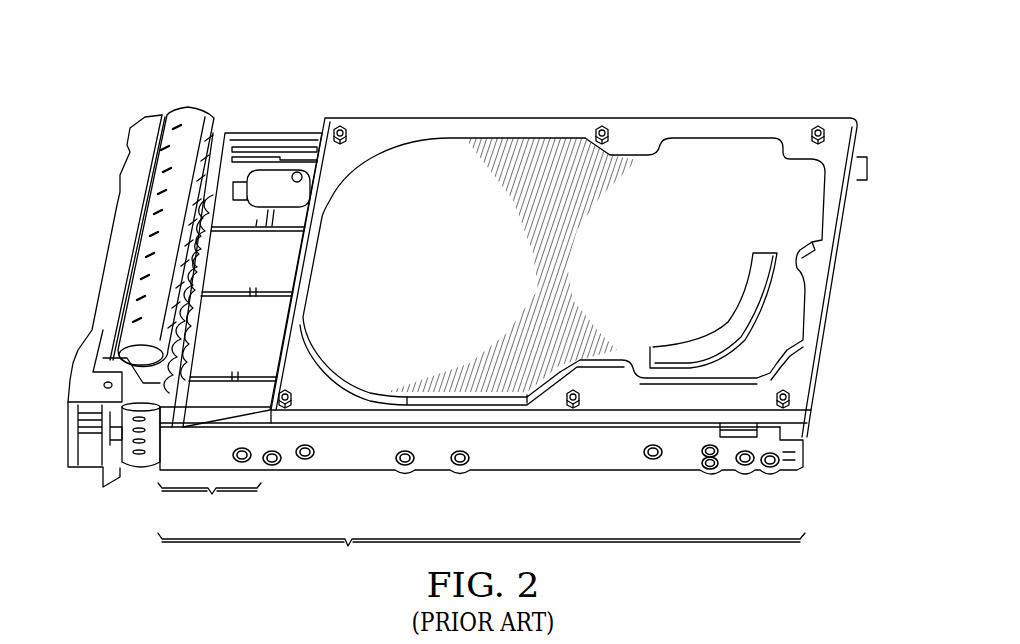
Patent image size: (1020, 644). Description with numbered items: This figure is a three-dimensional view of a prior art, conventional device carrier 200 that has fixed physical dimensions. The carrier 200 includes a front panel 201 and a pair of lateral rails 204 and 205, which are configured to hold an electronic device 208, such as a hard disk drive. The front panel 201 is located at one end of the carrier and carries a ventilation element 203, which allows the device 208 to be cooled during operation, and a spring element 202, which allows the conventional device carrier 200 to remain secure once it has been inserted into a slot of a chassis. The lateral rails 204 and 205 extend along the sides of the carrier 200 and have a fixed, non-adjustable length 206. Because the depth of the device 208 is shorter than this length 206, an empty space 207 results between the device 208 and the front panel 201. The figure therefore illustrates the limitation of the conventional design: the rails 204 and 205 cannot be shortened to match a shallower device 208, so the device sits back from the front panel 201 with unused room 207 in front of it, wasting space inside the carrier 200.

The conventional device carrier 200 is at (626, 86).
The front panel 201 is at (110, 253).
The spring element 202 is at (194, 112).
The ventilation element 203 is at (212, 258).
The lateral rail 204 is at (279, 131).
The lateral rail 205 is at (542, 474).
The length 206 is at (481, 558).
The empty space 207 is at (209, 506).
The electronic device 208 is at (695, 138).